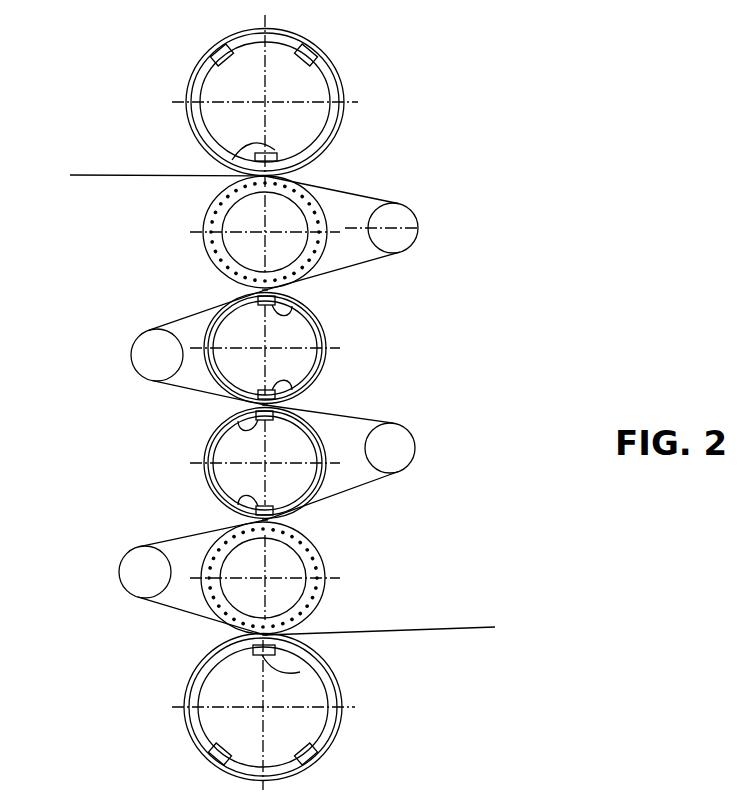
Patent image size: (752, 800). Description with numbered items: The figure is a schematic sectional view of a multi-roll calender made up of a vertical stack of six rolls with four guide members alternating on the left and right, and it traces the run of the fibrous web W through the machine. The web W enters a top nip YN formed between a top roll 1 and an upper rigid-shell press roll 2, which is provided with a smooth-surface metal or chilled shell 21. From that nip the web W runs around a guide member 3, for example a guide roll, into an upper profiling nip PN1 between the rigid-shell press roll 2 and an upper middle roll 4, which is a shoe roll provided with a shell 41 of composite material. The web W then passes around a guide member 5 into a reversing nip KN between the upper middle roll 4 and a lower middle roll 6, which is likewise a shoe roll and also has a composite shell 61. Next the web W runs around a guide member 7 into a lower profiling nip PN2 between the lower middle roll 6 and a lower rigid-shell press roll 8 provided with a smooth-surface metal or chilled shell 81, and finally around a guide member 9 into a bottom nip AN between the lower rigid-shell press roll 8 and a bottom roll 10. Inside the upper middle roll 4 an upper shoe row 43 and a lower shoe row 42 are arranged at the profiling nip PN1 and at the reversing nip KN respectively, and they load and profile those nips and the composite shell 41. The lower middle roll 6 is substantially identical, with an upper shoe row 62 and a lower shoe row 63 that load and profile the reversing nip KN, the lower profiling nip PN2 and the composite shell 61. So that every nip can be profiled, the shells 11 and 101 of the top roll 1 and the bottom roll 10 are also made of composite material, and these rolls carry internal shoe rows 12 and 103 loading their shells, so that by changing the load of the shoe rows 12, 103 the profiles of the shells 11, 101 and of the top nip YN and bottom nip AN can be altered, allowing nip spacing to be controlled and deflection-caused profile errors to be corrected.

The top roll 1 is at (230, 102).
The shell of the top roll 11 is at (335, 70).
The internal shoe row 12 is at (222, 150).
The upper rigid-shell press roll 2 is at (196, 232).
The smooth-surface metal or chilled shell 21 is at (200, 233).
The guide member 3 is at (400, 222).
The upper middle roll 4 is at (346, 333).
The composite shell 41 is at (327, 343).
The lower shoe row 42 is at (298, 388).
The upper shoe row 43 is at (297, 308).
The guide member 5 is at (138, 357).
The lower middle roll 6 is at (194, 472).
The composite shell 61 is at (205, 485).
The upper shoe row 62 is at (232, 423).
The lower shoe row 63 is at (238, 507).
The guide member 7 is at (405, 443).
The lower rigid-shell press roll 8 is at (345, 577).
The smooth-surface metal or chilled shell 81 is at (327, 594).
The guide member 9 is at (138, 570).
The bottom roll 10 is at (231, 708).
The shell of the bottom roll 101 is at (332, 742).
The internal shoe row 103 is at (290, 672).
The fibrous web W is at (80, 175).
The top nip YN is at (303, 175).
The upper profiling nip PN1 is at (240, 291).
The reversing nip KN is at (240, 405).
The lower profiling nip PN2 is at (295, 521).
The bottom nip AN is at (240, 633).